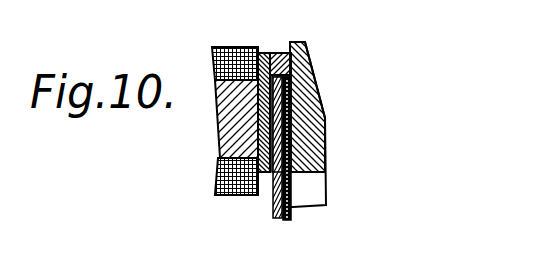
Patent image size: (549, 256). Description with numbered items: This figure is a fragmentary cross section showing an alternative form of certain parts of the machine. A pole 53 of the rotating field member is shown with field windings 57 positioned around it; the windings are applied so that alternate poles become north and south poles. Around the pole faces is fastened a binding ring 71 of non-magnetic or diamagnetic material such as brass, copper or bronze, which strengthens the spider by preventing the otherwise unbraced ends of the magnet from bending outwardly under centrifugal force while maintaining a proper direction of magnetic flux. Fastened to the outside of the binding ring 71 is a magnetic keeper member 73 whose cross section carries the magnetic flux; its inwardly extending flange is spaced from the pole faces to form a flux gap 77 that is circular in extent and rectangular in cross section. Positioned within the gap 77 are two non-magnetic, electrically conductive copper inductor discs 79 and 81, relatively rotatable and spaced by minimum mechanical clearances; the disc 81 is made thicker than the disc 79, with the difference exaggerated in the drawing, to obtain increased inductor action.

The poles 53 is at (230, 138).
The field windings 57 is at (213, 56).
The binding ring 71 is at (276, 53).
The magnetic keeper member 73 is at (313, 142).
The flux gap 77 is at (284, 124).
The disc 79 is at (293, 220).
The disc 81 is at (277, 215).